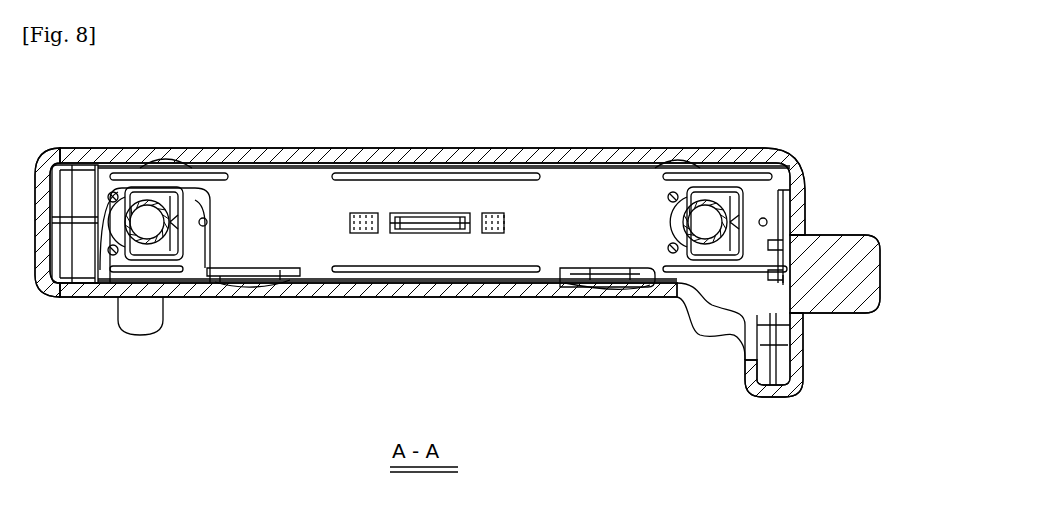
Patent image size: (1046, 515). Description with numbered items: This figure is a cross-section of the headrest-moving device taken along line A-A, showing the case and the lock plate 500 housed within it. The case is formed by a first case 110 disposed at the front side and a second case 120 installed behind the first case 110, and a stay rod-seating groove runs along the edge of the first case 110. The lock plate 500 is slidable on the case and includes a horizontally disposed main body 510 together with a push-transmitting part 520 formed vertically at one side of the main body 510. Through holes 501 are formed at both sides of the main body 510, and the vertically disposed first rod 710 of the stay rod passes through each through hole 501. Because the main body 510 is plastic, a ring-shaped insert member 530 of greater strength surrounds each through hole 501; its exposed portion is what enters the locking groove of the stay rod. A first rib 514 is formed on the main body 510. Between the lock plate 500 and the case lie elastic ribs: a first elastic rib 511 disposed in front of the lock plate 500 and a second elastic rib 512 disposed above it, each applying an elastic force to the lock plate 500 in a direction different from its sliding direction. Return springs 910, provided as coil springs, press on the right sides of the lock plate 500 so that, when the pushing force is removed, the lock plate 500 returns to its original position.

The first case 110 is at (422, 297).
The second case 120 is at (409, 152).
The lock plate 500 is at (444, 181).
The through hole 501 is at (207, 270).
The main body 510 is at (635, 185).
The first elastic rib 511 is at (622, 287).
The second elastic rib 512 is at (443, 222).
The first rib 514 is at (167, 165).
The push-transmitting part 520 is at (783, 250).
The insert member 530 is at (100, 270).
The first rod 710 is at (142, 192).
The return spring 910 is at (500, 215).